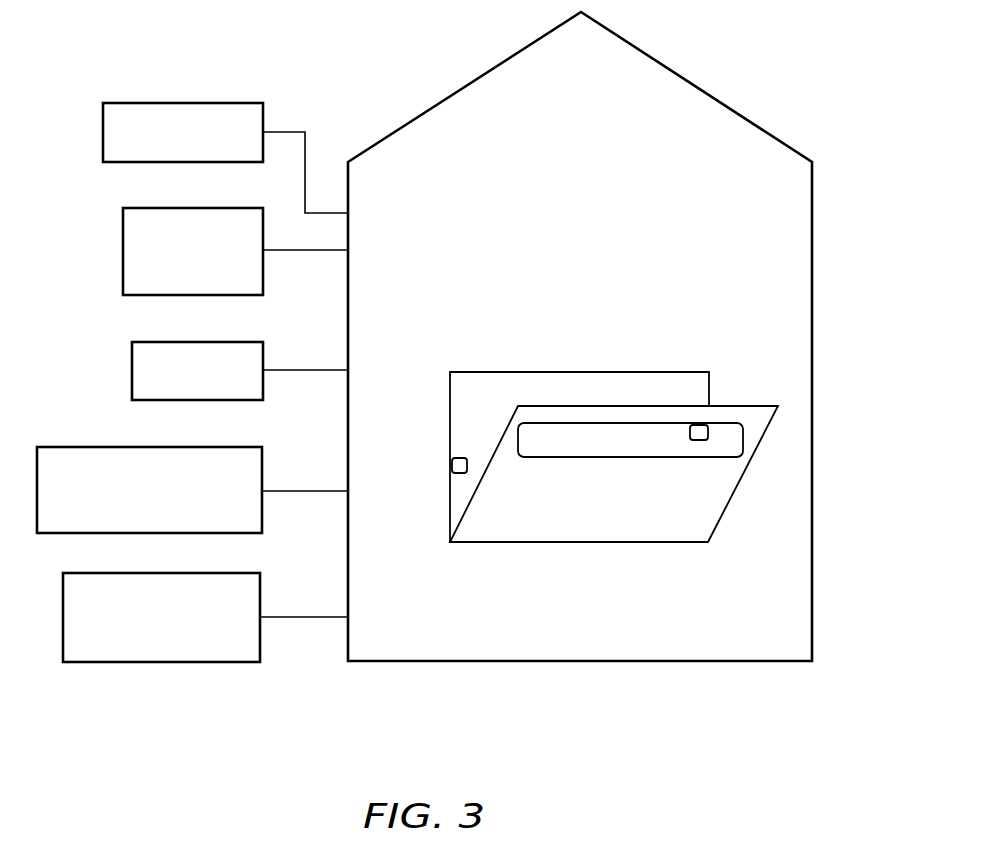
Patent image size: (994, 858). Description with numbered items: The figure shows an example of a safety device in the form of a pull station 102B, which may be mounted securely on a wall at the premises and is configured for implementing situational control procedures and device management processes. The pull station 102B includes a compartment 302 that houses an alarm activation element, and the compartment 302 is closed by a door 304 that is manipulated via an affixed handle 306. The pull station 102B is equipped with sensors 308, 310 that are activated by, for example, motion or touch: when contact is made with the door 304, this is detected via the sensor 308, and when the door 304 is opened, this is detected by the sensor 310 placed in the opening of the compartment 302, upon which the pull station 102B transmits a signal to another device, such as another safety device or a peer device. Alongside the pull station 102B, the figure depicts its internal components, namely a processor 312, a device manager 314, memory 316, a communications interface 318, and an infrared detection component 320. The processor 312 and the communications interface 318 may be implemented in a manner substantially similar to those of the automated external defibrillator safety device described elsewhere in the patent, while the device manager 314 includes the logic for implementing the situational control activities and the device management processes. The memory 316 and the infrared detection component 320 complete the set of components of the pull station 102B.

The pull station 102B is at (712, 95).
The compartment 302 is at (600, 370).
The door 304 is at (732, 505).
The handle 306 is at (599, 445).
The sensor 308 is at (702, 426).
The sensor 310 is at (452, 462).
The processor 312 is at (193, 103).
The device manager 314 is at (123, 230).
The memory 316 is at (265, 360).
The communications interface 318 is at (265, 472).
The infrared (IR) detection component 320 is at (202, 663).